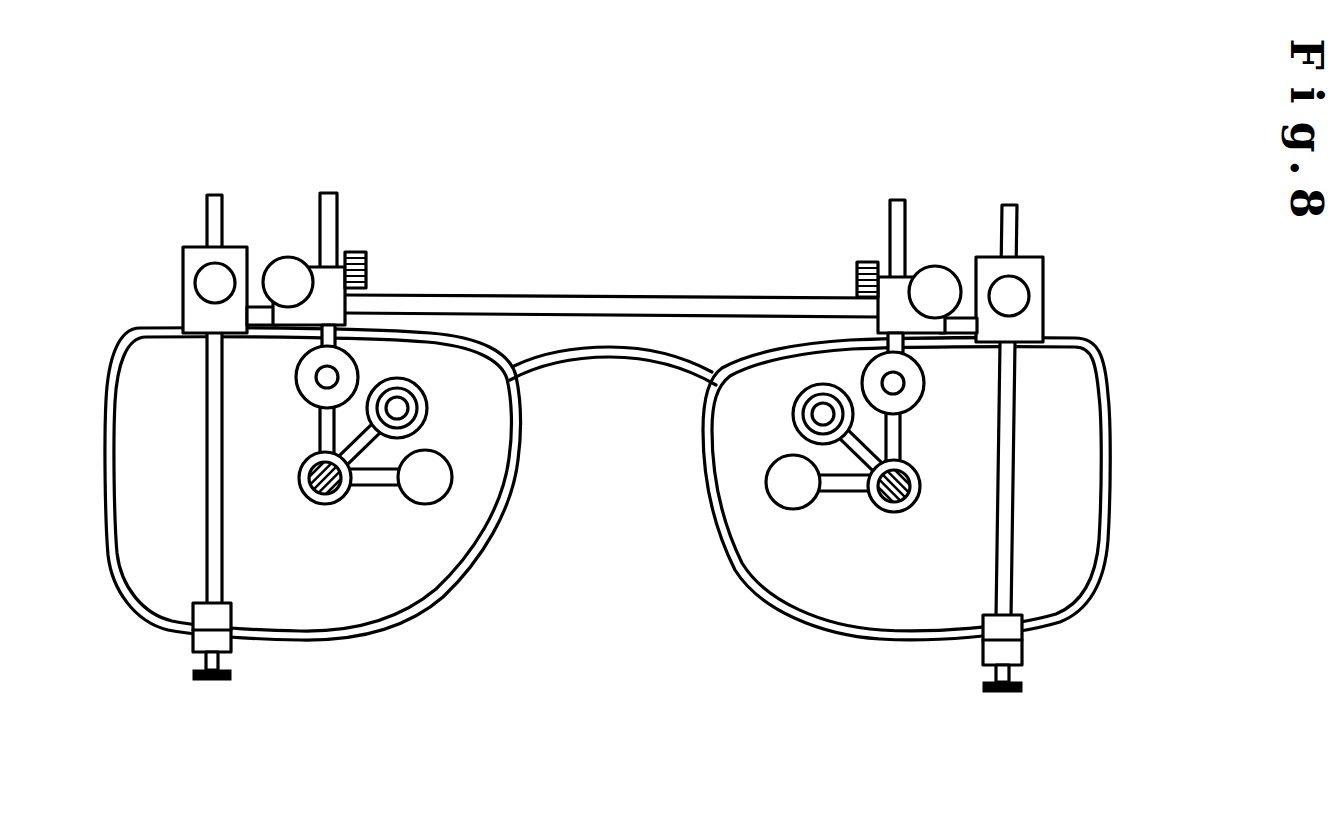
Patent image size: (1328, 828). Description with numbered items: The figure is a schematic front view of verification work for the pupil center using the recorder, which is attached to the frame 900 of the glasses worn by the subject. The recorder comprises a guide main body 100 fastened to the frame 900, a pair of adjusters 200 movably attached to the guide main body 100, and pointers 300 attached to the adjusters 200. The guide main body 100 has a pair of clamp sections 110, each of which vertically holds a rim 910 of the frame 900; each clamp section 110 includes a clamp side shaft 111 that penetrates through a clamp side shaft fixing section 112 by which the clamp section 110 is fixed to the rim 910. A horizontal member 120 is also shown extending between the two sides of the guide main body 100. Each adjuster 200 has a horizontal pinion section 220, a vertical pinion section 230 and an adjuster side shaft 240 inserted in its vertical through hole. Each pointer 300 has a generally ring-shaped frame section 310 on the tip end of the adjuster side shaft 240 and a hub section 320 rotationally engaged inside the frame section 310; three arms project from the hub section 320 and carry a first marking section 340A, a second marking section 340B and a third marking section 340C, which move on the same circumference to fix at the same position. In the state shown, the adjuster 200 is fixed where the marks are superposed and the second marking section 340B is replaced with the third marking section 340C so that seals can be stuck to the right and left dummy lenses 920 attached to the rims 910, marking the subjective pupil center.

The guide main body 100 is at (641, 399).
The clamp section 110 is at (641, 440).
The clamp side shaft 111 is at (207, 578).
The clamp side shaft fixing section 112 is at (184, 247).
The horizontal bar 120 is at (582, 300).
The adjuster 200 is at (613, 232).
The horizontal pinion section 220 is at (290, 262).
The vertical pinion section 230 is at (370, 268).
The adjuster side shaft 240 is at (328, 192).
The pointer 300 is at (616, 446).
The frame section 310 is at (332, 505).
The hub section 320 is at (305, 465).
The first marking section 340A is at (355, 352).
The second marking section 340B is at (425, 388).
The third marking section 340C is at (425, 505).
The frame 900 is at (642, 519).
The rim 910 is at (492, 548).
The dummy lens 920 is at (372, 612).